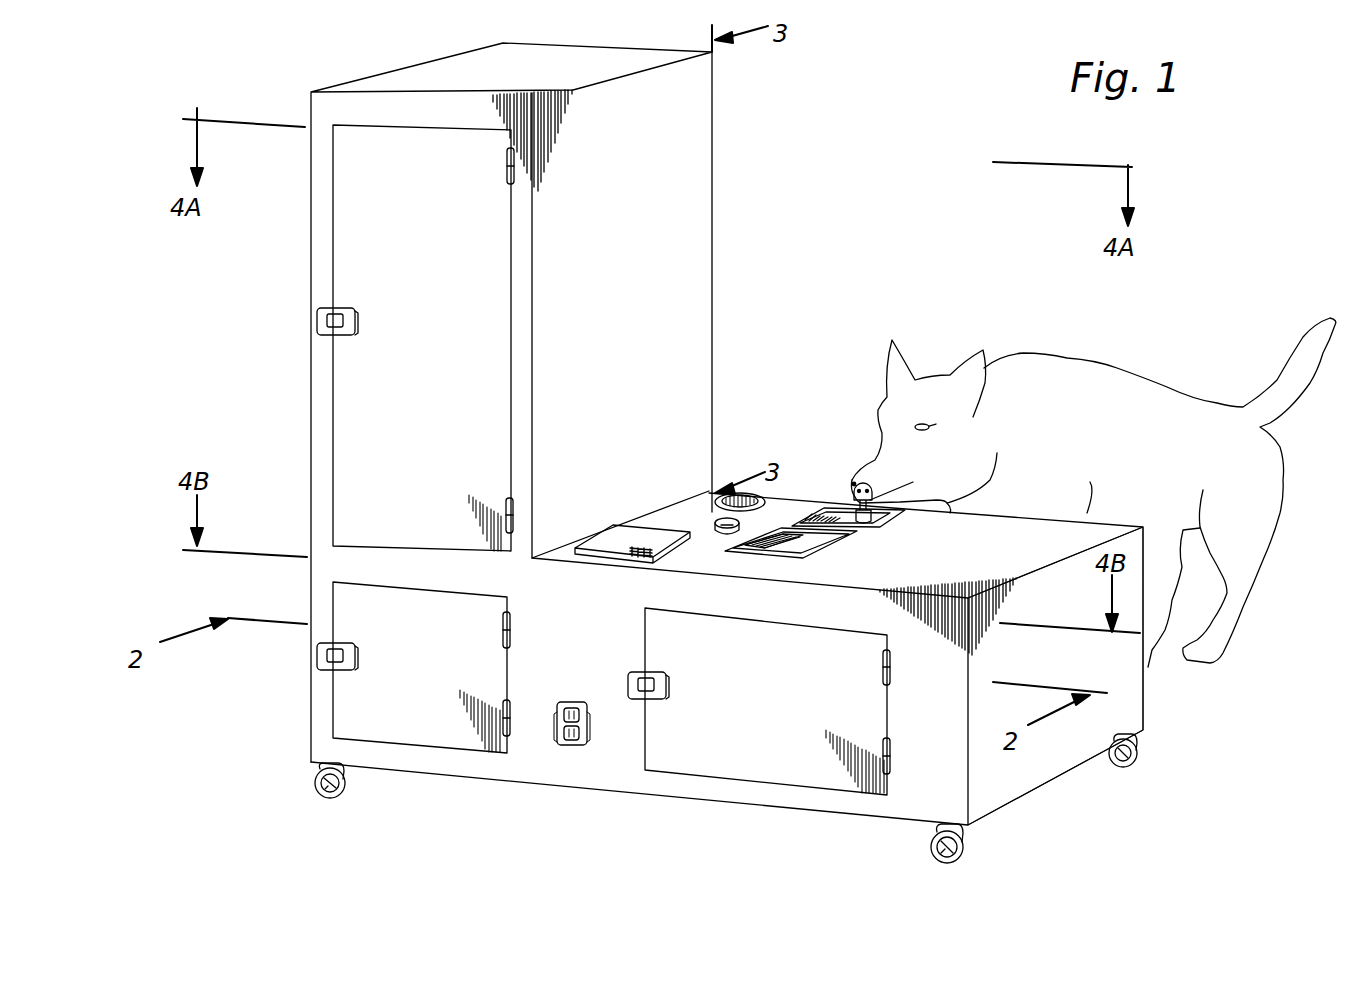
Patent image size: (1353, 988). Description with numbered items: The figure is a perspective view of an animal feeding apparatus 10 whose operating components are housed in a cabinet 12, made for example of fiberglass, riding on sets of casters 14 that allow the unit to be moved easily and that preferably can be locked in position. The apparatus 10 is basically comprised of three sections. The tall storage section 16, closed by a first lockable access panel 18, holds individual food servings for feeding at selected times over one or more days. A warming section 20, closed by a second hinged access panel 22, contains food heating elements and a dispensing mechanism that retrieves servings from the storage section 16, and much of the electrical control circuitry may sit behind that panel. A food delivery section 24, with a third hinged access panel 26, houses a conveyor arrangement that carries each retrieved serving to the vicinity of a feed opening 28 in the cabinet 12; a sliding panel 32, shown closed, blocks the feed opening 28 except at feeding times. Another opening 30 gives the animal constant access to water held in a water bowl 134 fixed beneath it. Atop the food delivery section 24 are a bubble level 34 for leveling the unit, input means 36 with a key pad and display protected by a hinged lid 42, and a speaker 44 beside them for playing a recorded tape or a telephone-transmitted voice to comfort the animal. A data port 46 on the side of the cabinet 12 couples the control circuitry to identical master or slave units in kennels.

The animal feeding apparatus 10 is at (742, 372).
The cabinet 12 is at (592, 634).
The casters 14 is at (315, 782).
The storage section 16 is at (707, 183).
The first lockable access panel 18 is at (342, 230).
The warming section 20 is at (298, 672).
The second hinged access panel 22 is at (340, 695).
The food delivery section 24 is at (1123, 675).
The third hinged access panel 26 is at (728, 767).
The feed opening 28 is at (783, 548).
The opening 30 is at (829, 508).
The sliding panel 32 is at (840, 543).
The bubble level 34 is at (745, 540).
The input means 36 is at (628, 535).
The hinged lid 42 is at (633, 557).
The speaker 44 is at (740, 533).
The data port 46 is at (560, 752).
The water bowl 134 is at (900, 511).